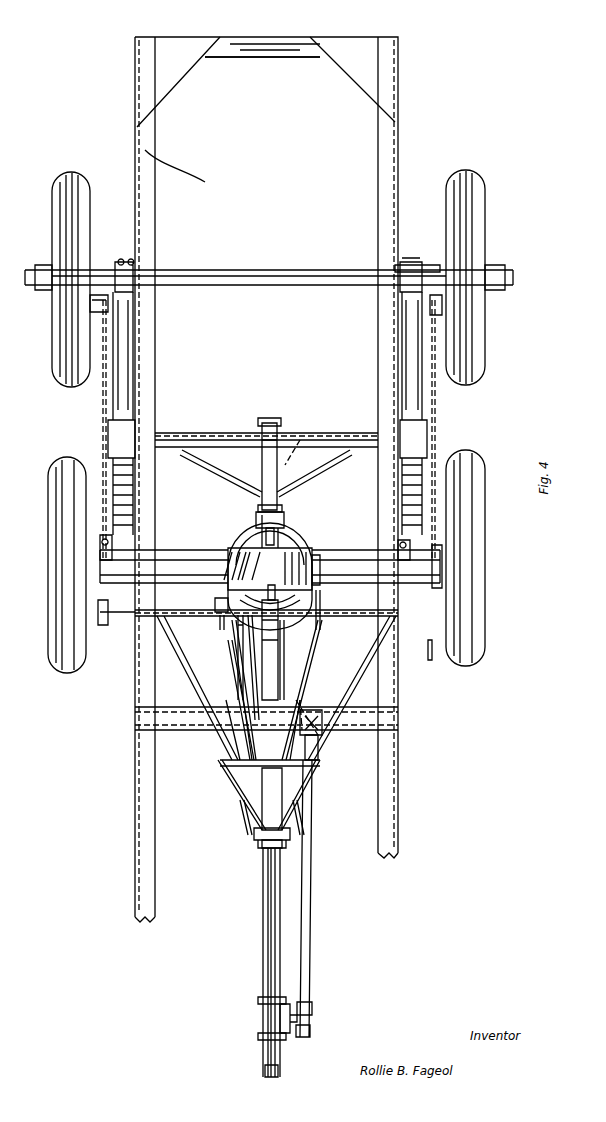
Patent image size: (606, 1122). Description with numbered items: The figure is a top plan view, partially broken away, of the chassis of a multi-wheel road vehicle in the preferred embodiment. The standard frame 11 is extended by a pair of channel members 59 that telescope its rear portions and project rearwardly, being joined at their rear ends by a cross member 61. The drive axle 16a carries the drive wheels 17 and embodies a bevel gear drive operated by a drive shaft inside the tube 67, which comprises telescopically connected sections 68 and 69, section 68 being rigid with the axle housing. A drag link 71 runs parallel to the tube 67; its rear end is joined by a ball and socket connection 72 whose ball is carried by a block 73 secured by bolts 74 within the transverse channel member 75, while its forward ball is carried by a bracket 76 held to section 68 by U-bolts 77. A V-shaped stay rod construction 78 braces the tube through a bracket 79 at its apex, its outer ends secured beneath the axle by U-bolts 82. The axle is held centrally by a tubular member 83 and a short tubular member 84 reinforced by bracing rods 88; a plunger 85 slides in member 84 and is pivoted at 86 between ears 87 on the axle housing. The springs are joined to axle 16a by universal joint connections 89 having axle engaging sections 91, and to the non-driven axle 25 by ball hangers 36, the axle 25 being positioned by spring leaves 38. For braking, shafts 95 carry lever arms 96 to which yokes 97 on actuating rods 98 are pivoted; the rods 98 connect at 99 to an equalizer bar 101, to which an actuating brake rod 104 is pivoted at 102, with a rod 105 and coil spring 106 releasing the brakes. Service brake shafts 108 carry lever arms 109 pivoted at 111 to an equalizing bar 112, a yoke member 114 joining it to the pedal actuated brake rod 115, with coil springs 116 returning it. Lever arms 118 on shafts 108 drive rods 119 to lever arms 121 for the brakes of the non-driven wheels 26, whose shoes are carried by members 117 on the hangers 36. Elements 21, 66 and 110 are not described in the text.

The frame 11 is at (140, 835).
The cross member 61 is at (238, 58).
The channel members 59 is at (188, 170).
The axle 25 is at (268, 272).
The non-driven wheels 26 is at (60, 185).
The wheels 17 is at (62, 485).
The ball hangers 36 is at (122, 265).
The lever arm 121 is at (88, 302).
The spring leaves 38 is at (120, 385).
The rod 119 is at (103, 415).
The coil spring 21 is at (118, 490).
The universal joint connections 89 is at (102, 540).
The tubular member 83 is at (195, 434).
The tubular member 84 is at (264, 430).
The pivot axis 66 is at (300, 438).
The bracing rods 88 is at (212, 465).
The drive axle 16a is at (200, 550).
The U-bolts 82 is at (390, 552).
The pivotal connection 86 is at (248, 540).
The plunger 85 is at (256, 518).
The ears 87 is at (286, 520).
The lever arm 96 is at (316, 556).
The pivotal connections 111 is at (229, 563).
The equalizing bar 112 is at (248, 560).
The coil springs 116 is at (285, 605).
The lever arm 109 is at (270, 591).
The axle end bracket 110 is at (103, 628).
The shafts 95 is at (195, 612).
The shafts 108 is at (190, 638).
The axle engaging sections 91 is at (213, 629).
The yoke 97 is at (322, 620).
The actuating rods 98 is at (312, 625).
The pivotal connections 99 is at (226, 690).
The rod 105 is at (240, 680).
The lever arm 118 is at (248, 667).
The coil spring 106 is at (266, 650).
The pivotal connection 102 is at (232, 720).
The yoke member 114 is at (290, 660).
The block 73 is at (306, 706).
The ball and socket connection 72 is at (310, 705).
The bolts 74 is at (318, 748).
The transverse channel member 75 is at (180, 715).
The stay rod construction 78 is at (238, 790).
The equalizer bar 101 is at (270, 799).
The actuating brake rod 104 is at (240, 815).
The bracket 79 is at (254, 835).
The pedal actuated brake rod 115 is at (298, 808).
The tube 67 is at (263, 895).
The drag link 71 is at (310, 930).
The tube section 68 is at (266, 955).
The U-bolts 77 is at (262, 998).
The bracket 76 is at (282, 1018).
The tube section 69 is at (265, 1070).
The members 117 is at (432, 265).